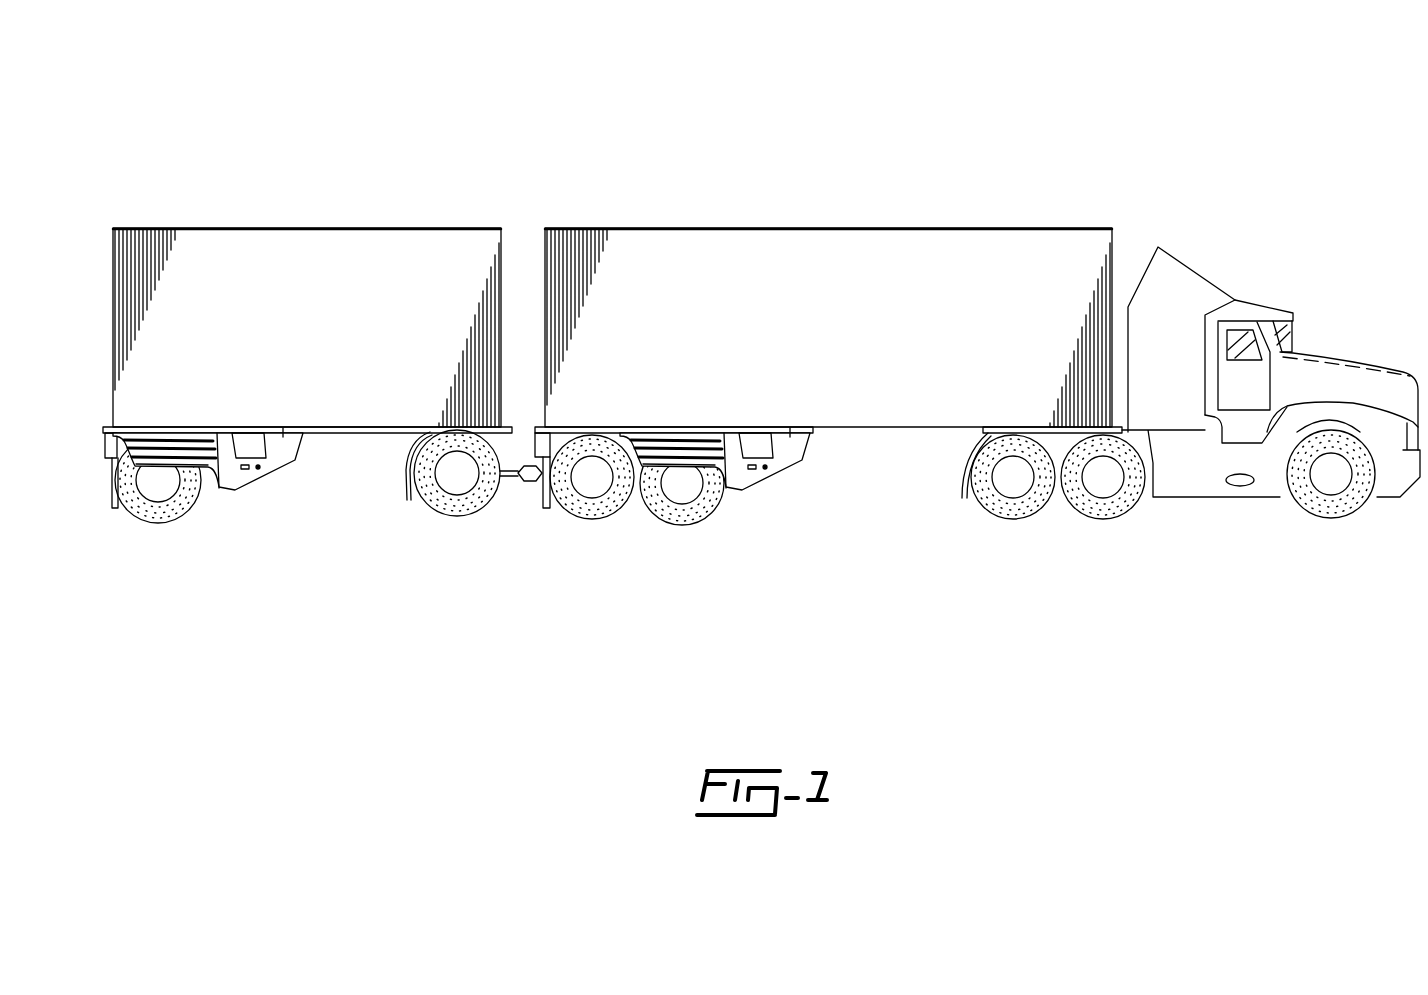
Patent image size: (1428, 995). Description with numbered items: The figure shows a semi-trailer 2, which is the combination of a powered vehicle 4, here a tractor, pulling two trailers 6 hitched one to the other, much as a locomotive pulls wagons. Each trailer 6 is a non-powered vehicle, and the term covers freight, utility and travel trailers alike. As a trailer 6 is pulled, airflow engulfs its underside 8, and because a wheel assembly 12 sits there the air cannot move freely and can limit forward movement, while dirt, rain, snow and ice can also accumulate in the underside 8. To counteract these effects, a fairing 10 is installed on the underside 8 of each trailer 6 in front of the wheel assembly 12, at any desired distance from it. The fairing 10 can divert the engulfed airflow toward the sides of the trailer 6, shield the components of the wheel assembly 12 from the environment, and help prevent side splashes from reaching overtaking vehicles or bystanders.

The semi-trailer 2 is at (761, 370).
The powered vehicle 4 is at (1265, 307).
The trailer 6 is at (858, 228).
The underside 8 is at (850, 465).
The fairing 10 is at (263, 478).
The wheel assembly 12 is at (680, 490).